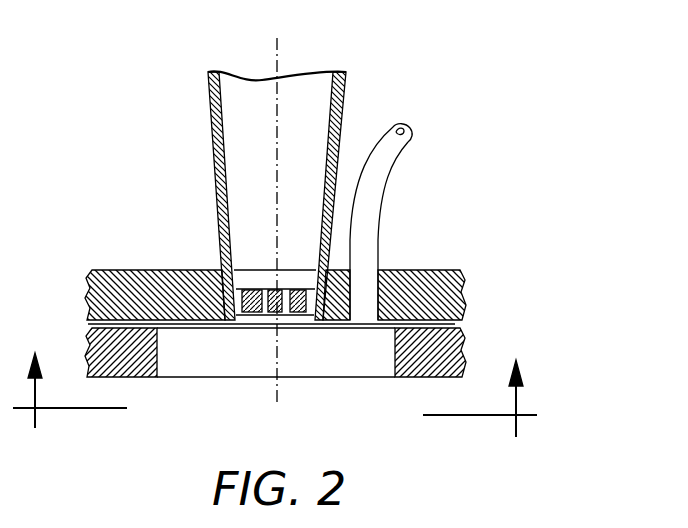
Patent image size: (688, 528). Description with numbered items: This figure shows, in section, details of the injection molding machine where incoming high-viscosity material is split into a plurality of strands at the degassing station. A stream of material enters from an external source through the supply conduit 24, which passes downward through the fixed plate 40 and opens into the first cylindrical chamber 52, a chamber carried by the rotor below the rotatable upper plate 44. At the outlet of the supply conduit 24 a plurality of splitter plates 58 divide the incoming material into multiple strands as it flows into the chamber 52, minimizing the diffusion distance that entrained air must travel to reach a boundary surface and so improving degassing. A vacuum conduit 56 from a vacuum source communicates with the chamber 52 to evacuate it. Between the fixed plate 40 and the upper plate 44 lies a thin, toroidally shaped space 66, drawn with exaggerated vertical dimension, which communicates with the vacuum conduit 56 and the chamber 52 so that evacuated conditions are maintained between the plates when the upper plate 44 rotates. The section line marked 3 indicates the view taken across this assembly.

The supply conduit 24 is at (347, 90).
The fixed plate member 40 is at (425, 270).
The upper plate 44 is at (204, 380).
The first cylindrical chamber 52 is at (287, 423).
The vacuum conduit 56 is at (388, 172).
The splitter plates 58 is at (272, 290).
The toroidally shaped space 66 is at (455, 325).
The section line 3- 3 is at (275, 377).